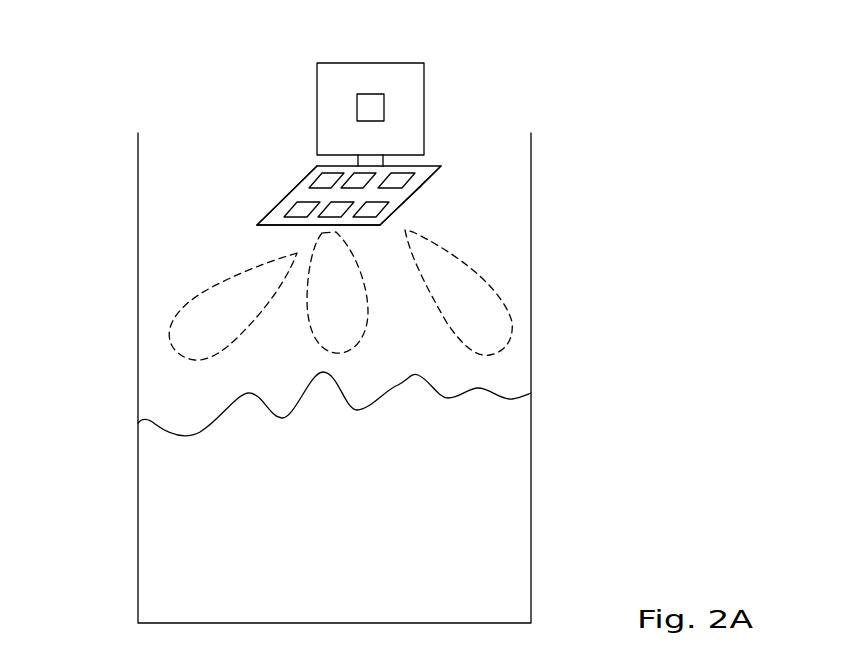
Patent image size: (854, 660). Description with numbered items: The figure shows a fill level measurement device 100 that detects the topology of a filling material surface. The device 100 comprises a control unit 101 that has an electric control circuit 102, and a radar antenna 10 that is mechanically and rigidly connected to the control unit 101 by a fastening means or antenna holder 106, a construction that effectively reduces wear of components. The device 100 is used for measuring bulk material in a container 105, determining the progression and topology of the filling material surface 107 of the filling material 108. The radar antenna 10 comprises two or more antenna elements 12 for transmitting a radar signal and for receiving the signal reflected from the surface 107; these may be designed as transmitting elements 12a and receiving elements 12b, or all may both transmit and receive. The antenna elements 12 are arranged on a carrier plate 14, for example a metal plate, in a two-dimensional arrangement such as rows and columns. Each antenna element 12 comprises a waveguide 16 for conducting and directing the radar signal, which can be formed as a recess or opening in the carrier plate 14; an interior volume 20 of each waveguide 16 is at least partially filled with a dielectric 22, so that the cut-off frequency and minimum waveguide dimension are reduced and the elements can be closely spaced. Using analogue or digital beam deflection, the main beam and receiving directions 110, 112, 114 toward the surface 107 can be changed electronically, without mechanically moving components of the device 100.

The fill level measurement device 100 is at (442, 77).
The control unit 101 is at (317, 96).
The electric control circuit 102 is at (364, 94).
The antenna holder 106 is at (368, 166).
The radar antenna 10 is at (447, 160).
The waveguide 16 is at (423, 177).
The carrier plate 14 is at (418, 192).
The antenna elements 12 is at (393, 206).
The transmitting elements 12a is at (323, 180).
The receiving elements 12b is at (297, 208).
The dielectric 22 is at (262, 226).
The interior volume 20 is at (326, 211).
The container 105 is at (531, 247).
The filling material surface 107 is at (488, 392).
The filling material 108 is at (495, 508).
The main beam direction 110 is at (167, 343).
The main beam direction 112 is at (353, 347).
The main beam direction 114 is at (503, 348).